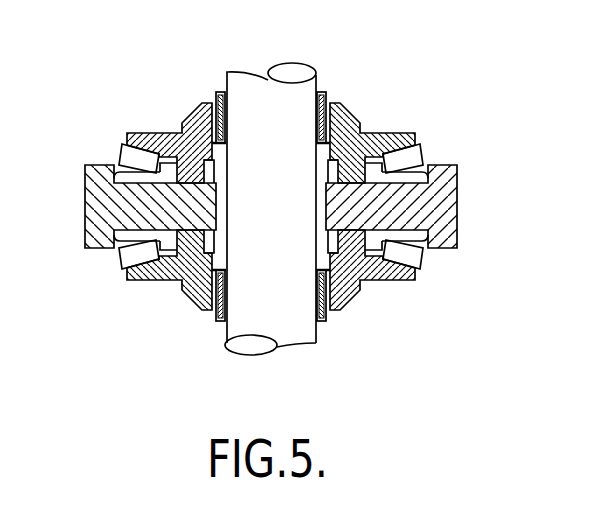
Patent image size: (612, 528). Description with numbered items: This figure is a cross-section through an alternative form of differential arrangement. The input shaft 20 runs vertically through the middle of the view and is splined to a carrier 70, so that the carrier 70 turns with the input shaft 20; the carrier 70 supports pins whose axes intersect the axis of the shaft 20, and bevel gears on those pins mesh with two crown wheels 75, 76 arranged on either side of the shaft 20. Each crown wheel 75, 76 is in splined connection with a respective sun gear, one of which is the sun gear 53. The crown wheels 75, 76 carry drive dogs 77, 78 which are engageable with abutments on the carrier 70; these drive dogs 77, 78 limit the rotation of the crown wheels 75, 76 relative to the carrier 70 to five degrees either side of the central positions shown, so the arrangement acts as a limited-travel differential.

The input shaft 20 is at (280, 110).
The sun gear 53 is at (328, 322).
The carrier 70 is at (440, 192).
The crown wheel 75 is at (390, 140).
The crown wheel 76 is at (388, 268).
The drive dog 77 is at (183, 122).
The drive dog 78 is at (186, 236).